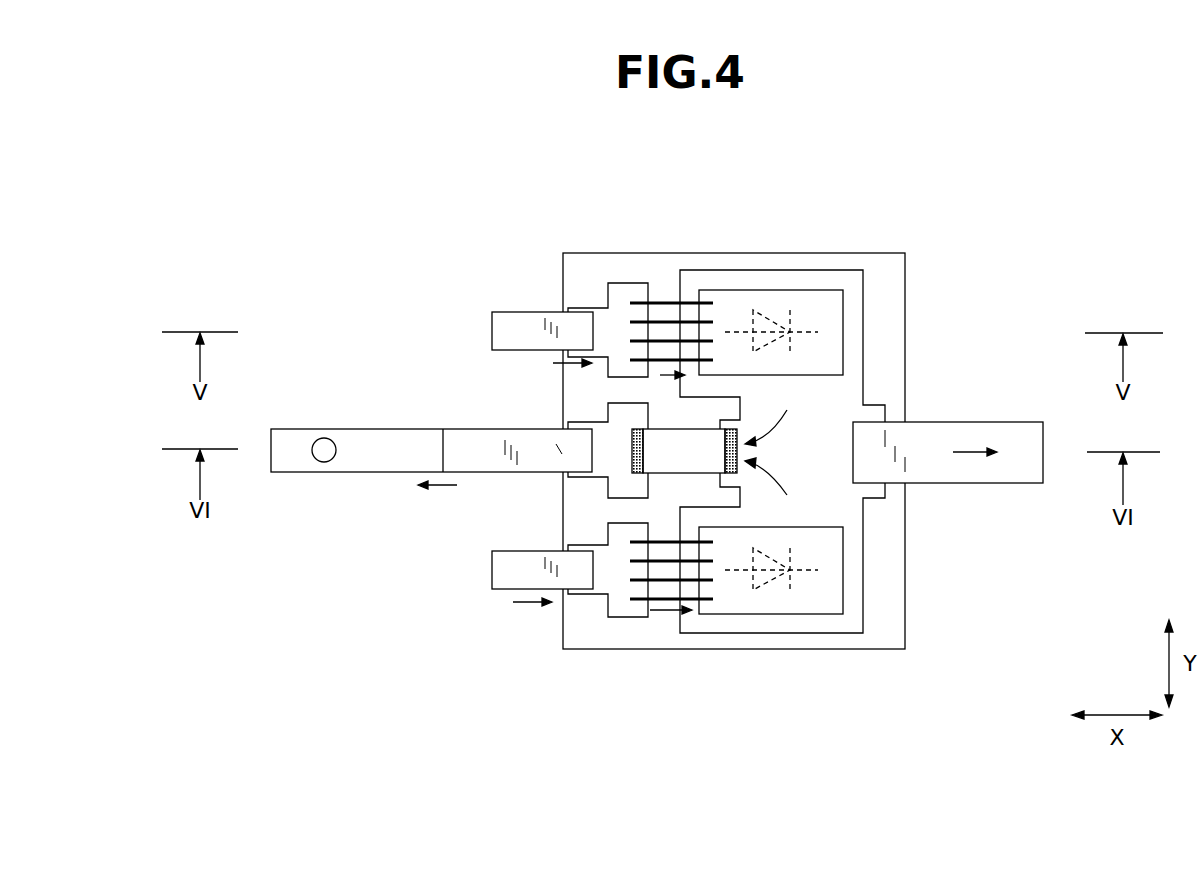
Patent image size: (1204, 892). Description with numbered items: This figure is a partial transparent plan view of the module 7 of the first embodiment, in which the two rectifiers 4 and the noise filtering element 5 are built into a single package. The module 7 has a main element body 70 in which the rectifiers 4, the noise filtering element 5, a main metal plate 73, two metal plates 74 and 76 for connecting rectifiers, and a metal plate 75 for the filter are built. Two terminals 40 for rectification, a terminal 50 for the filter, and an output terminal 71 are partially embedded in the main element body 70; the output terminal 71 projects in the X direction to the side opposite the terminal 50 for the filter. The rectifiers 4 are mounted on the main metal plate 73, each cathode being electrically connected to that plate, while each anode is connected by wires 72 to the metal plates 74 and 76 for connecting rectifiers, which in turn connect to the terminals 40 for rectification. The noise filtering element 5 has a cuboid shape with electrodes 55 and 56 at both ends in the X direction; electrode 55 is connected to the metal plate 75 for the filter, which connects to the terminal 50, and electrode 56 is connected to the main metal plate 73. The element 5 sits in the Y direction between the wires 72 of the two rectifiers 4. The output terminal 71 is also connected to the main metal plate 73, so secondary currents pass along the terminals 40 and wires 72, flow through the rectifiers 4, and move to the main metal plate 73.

The rectifiers 4 is at (803, 686).
The noise filtering element 5 is at (688, 466).
The module 7 is at (657, 436).
The terminals for rectification 40 is at (480, 660).
The terminal for the filter 50 is at (470, 440).
The electrode 55 is at (632, 440).
The electrode 56 is at (743, 430).
The main element body 70 is at (882, 622).
The output terminal 71 is at (937, 467).
The wires 72 is at (630, 670).
The main metal plate 73 is at (852, 626).
The metal plate for connecting rectifiers 74 is at (617, 295).
The metal plate for the filter 75 is at (620, 484).
The metal plate for connecting rectifiers 76 is at (615, 607).